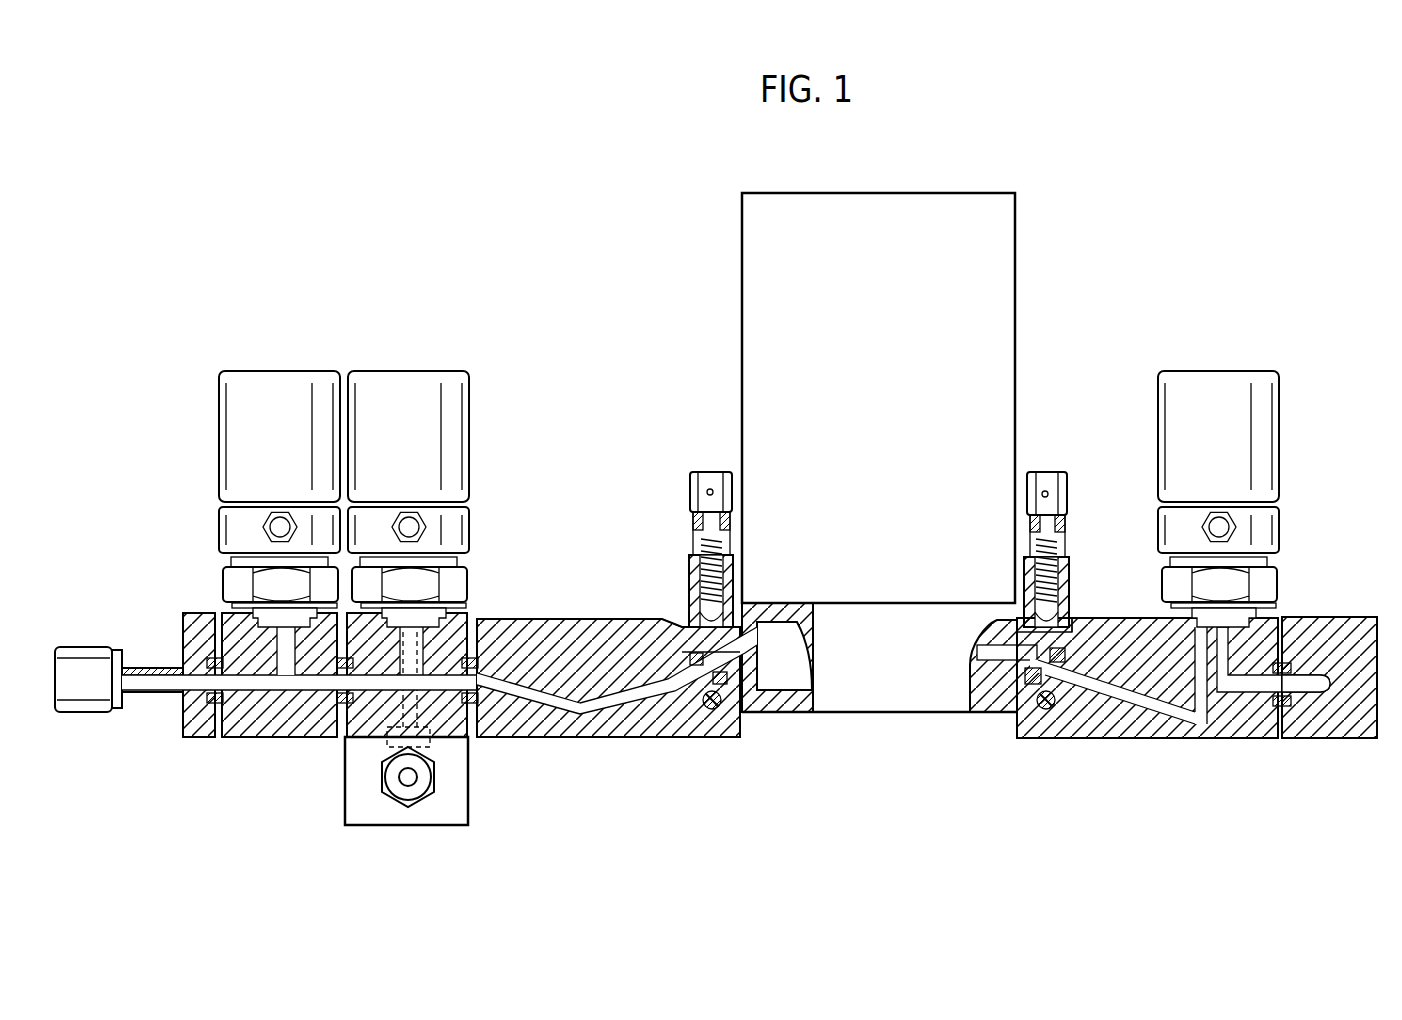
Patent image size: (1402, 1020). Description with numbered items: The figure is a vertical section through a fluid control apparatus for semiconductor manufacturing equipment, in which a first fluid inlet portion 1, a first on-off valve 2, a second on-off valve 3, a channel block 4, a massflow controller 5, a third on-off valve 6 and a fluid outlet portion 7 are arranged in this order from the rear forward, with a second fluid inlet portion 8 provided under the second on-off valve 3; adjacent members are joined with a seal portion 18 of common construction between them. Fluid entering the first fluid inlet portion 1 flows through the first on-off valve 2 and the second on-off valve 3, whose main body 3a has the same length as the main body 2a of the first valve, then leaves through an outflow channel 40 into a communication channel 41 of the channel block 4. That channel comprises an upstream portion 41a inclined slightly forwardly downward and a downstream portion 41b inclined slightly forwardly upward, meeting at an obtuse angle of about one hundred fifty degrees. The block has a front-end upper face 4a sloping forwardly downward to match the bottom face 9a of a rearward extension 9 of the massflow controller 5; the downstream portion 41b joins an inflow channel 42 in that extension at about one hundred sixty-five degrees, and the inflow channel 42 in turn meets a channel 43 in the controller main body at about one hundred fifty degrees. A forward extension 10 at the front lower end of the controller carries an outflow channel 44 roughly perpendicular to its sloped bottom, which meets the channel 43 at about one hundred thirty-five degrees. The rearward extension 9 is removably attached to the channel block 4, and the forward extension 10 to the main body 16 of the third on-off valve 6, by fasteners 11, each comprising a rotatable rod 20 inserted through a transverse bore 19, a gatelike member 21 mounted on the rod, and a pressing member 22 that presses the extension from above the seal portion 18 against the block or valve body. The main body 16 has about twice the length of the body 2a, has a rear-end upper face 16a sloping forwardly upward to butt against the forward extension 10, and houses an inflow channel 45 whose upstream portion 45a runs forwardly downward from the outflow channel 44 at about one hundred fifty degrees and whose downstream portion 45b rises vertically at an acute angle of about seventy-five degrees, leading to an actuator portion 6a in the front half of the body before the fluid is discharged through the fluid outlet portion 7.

The first fluid inlet portion 1 is at (150, 694).
The first on-off valve 2 is at (302, 371).
The main body of first on-off valve 2a is at (253, 720).
The second on-off valve 3 is at (428, 371).
The main body of second on-off valve 3a is at (457, 743).
The channel block 4 is at (577, 619).
The front-end upper face of channel block 4a is at (685, 628).
The massflow controller 5 is at (955, 203).
The third on-off valve 6 is at (1260, 461).
The actuator portion of third on-off valve 6a is at (1264, 533).
The fluid outlet portion 7 is at (1348, 740).
The second fluid inlet portion 8 is at (450, 810).
The rearward extension 9 is at (683, 627).
The bottom face of rearward extension 9a is at (742, 700).
The forward extension 10 is at (1070, 600).
The fastener 11 is at (712, 475).
The main body of third on-off valve 16 is at (1165, 740).
The rear-end upper face of third on-off valve main body 16a is at (1075, 630).
The seal portion 18 is at (343, 677).
The bore 19 is at (698, 668).
The rotatable rod 20 is at (716, 710).
The gatelike member 21 is at (732, 517).
The pressing member 22 is at (730, 570).
The outflow channel of second on-off valve 40 is at (440, 676).
The communication channel 41 is at (617, 735).
The upstream portion of communication channel 41a is at (552, 705).
The downstream portion of communication channel 41b is at (648, 705).
The inflow channel 42 is at (783, 664).
The channel in massflow controller main body 43 is at (990, 617).
The outflow channel 44 is at (982, 713).
The inflow channel of third on-off valve 45 is at (1180, 748).
The upstream portion of third valve inflow channel 45a is at (1108, 703).
The downstream portion of third valve inflow channel 45b is at (1210, 690).